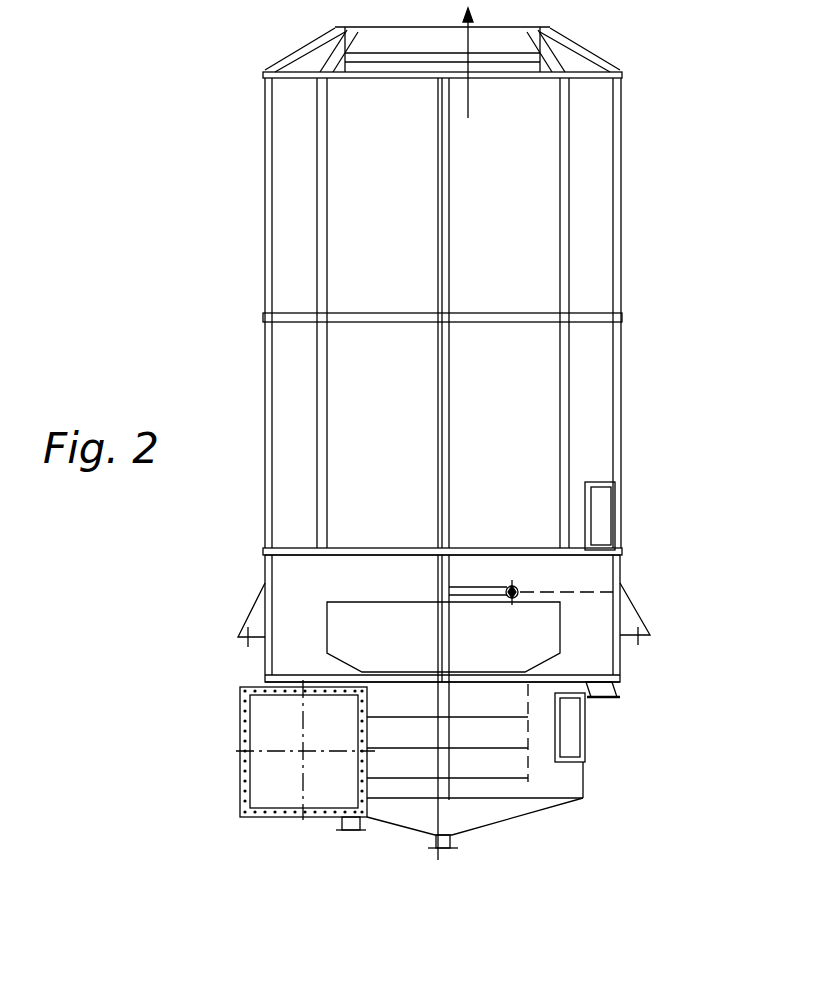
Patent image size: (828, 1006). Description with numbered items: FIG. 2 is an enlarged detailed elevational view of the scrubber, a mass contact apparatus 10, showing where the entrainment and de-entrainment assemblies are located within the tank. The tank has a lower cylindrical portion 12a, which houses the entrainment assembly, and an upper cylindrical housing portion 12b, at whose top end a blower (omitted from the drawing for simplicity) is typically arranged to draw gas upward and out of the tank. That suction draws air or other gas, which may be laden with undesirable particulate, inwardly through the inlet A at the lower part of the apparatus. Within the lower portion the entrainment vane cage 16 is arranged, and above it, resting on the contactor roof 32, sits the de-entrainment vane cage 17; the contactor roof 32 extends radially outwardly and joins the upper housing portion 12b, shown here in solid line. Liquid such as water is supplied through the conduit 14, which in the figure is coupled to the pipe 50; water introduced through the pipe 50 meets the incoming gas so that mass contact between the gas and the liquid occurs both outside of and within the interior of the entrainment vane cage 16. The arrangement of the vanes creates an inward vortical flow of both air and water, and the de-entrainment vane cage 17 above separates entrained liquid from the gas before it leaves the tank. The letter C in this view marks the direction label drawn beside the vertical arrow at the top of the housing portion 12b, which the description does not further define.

The mass contact apparatus 10 is at (219, 133).
The lower cylindrical portion 12a is at (583, 775).
The upper cylindrical housing portion 12b is at (621, 120).
The conduit 14 is at (518, 570).
The entrainment vane cage 16 is at (528, 768).
The de-entrainment vane cage 17 is at (331, 625).
The contactor roof 32 is at (303, 681).
The pipe 50 is at (437, 588).
The inlet A is at (265, 797).
The air flow direction C is at (468, 81).